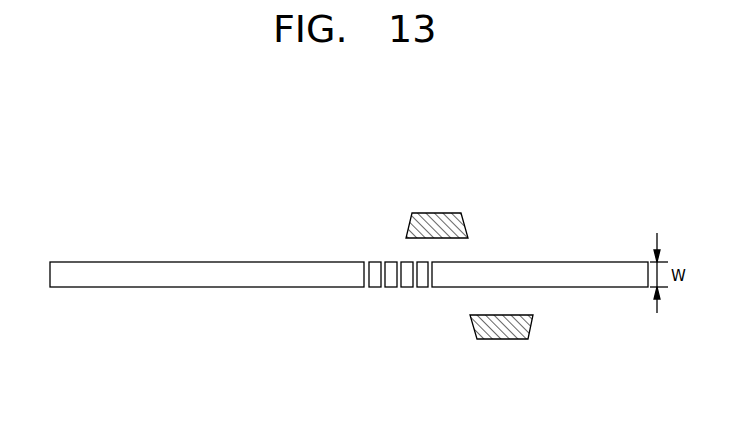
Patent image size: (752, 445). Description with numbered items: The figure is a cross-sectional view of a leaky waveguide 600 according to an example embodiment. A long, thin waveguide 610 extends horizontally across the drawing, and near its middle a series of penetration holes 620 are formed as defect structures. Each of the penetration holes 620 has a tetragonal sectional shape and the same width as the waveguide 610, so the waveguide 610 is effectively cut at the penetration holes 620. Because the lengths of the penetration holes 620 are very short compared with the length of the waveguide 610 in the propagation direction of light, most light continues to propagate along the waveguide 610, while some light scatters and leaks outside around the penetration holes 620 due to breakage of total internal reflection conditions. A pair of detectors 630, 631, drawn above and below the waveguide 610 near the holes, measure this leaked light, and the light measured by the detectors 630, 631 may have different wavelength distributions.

The leaky waveguide 600 is at (618, 178).
The waveguide 610 is at (178, 272).
The penetration holes 620 is at (432, 288).
The detector 630 is at (434, 226).
The detector 631 is at (503, 327).